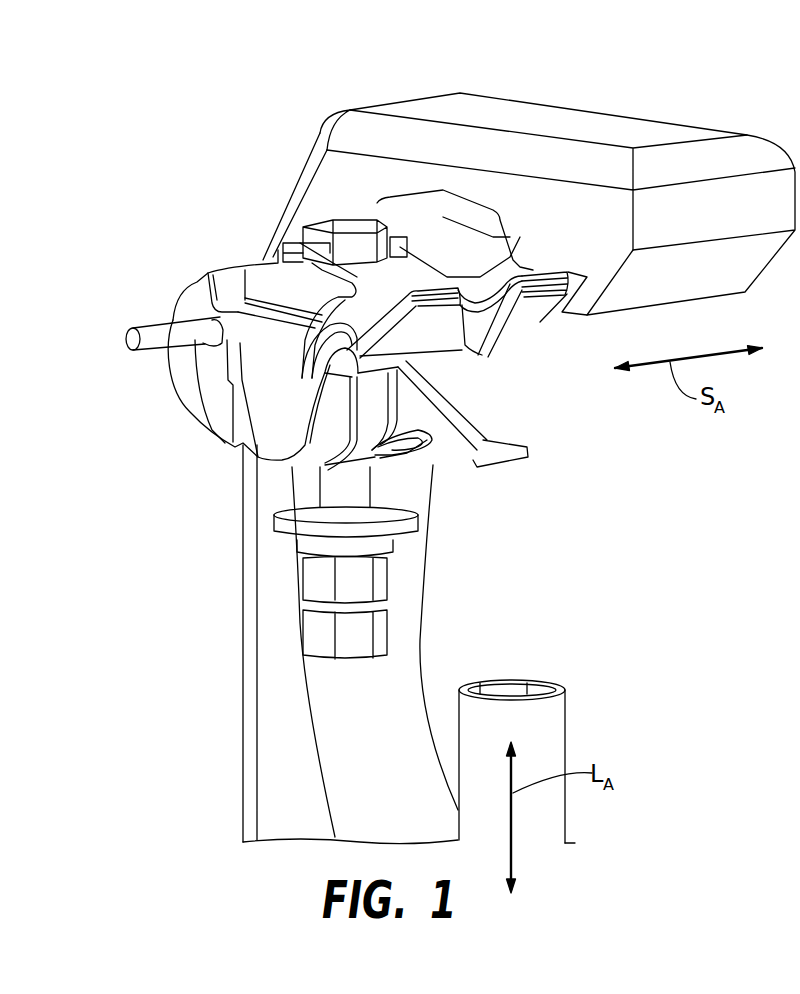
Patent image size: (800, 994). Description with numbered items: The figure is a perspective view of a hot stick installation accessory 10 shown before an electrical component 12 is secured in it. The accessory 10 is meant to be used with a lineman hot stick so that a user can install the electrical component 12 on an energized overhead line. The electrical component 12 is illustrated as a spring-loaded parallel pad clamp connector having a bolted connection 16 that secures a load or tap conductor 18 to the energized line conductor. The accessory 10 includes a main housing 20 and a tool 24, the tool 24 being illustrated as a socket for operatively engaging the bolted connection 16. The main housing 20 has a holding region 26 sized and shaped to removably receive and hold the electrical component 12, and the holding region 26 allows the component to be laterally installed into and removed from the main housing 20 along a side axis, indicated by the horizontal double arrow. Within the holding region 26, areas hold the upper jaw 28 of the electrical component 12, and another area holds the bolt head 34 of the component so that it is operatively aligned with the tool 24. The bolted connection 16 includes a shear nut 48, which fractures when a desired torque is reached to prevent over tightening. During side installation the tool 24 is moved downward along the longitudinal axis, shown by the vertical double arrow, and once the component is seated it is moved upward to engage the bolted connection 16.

The hot stick installation accessory 10 is at (556, 90).
The electrical component 12 is at (265, 393).
The bolted connection 16 is at (402, 576).
The tap conductor 18 is at (128, 340).
The main housing 20 is at (268, 128).
The tool 24 is at (576, 702).
The holding region 26 is at (445, 215).
The upper jaw 28 is at (198, 292).
The bolt head 34 is at (333, 225).
The shear nut 48 is at (318, 636).